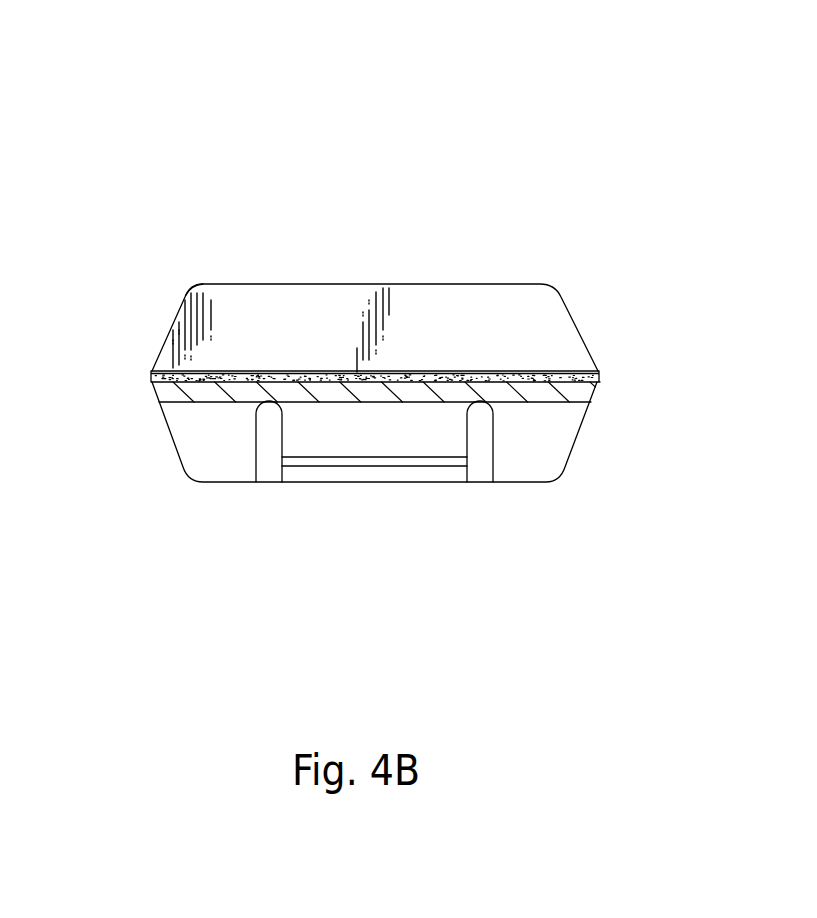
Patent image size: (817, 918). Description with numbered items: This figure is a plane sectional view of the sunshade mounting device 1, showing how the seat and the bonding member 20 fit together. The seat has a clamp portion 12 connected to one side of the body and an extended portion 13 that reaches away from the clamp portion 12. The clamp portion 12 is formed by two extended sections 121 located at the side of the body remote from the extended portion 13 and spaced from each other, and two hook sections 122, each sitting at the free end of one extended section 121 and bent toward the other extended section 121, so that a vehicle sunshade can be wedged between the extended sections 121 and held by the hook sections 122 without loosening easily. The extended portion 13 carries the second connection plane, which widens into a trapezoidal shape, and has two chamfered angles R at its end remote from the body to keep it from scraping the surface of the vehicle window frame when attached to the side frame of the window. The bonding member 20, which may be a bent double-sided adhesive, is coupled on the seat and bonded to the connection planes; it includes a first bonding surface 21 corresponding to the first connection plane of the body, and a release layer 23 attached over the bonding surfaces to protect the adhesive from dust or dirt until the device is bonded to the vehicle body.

The light emitting device 1 is at (683, 163).
The clamp portion 12 is at (375, 482).
The extended sections 121 is at (298, 428).
The hook sections 122 is at (443, 465).
The extended portion 13 is at (537, 283).
The bonding member 20 is at (601, 374).
The first bonding surface 21 is at (243, 373).
The release layer 23 is at (553, 342).
The chamfered angles R is at (208, 283).